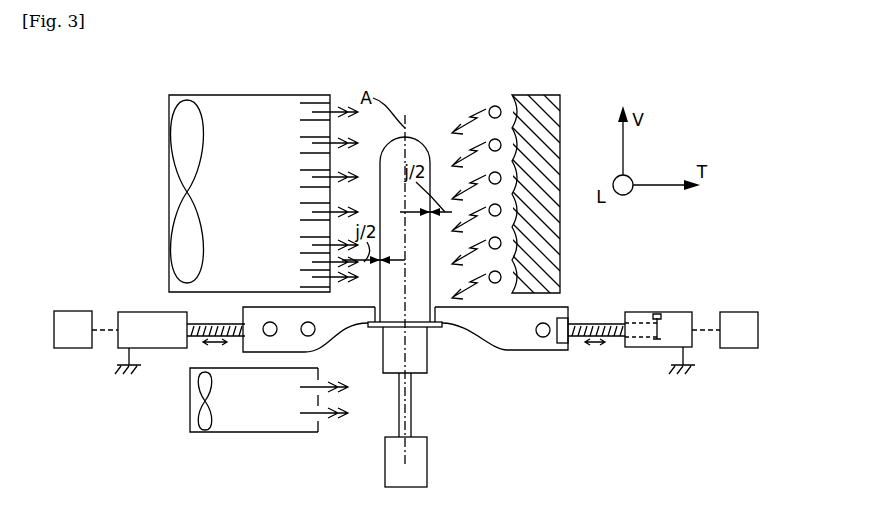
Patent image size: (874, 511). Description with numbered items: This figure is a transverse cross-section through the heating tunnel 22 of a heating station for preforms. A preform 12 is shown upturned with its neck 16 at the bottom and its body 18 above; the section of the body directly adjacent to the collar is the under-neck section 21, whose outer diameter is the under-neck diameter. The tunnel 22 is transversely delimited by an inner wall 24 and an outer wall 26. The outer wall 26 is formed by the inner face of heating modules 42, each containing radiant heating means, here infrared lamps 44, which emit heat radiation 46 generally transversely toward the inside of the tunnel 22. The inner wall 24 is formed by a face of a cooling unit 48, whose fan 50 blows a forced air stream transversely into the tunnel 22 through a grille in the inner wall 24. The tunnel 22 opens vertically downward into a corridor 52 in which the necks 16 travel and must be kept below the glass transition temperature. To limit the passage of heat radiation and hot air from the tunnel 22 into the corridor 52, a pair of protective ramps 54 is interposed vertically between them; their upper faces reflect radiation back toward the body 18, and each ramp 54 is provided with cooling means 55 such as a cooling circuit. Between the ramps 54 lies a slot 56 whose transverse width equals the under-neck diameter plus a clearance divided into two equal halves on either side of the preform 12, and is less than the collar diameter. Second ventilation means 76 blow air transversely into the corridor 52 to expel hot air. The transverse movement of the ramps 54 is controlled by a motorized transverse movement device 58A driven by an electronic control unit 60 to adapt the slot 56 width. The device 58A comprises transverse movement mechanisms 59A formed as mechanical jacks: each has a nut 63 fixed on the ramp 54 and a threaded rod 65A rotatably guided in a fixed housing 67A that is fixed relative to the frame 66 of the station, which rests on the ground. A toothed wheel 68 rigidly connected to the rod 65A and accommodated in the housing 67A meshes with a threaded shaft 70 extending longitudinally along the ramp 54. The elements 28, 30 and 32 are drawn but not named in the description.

The preform 12 is at (364, 161).
The neck 16 is at (387, 342).
The body 18 is at (385, 196).
The under-neck section 21 is at (417, 297).
The heating tunnel 22 is at (415, 276).
The inner wall 24 is at (340, 97).
The outer wall 26 is at (504, 107).
The movement direction 28 is at (420, 414).
The actuating rod 30 is at (419, 365).
The drive unit 32 is at (392, 472).
The heating module 42 is at (550, 127).
The lamp 44 is at (541, 98).
The heat radiation 46 is at (473, 111).
The cooling unit 48 is at (224, 138).
The fan 50 is at (185, 253).
The corridor 52 is at (443, 340).
The protective ramp 54 is at (286, 333).
The cooling means 55 is at (312, 333).
The slot 56 is at (394, 312).
The motorized transverse movement device 58A is at (151, 321).
The transverse movement mechanism 59A is at (600, 313).
The electronic control unit 60 is at (406, 329).
The nut 63 is at (565, 316).
The rod 65A is at (208, 318).
The frame 66 is at (122, 375).
The fixed housing 67A is at (135, 320).
The toothed wheel 68 is at (693, 338).
The threaded shaft 70 is at (662, 324).
The second ventilation means 76 is at (205, 437).